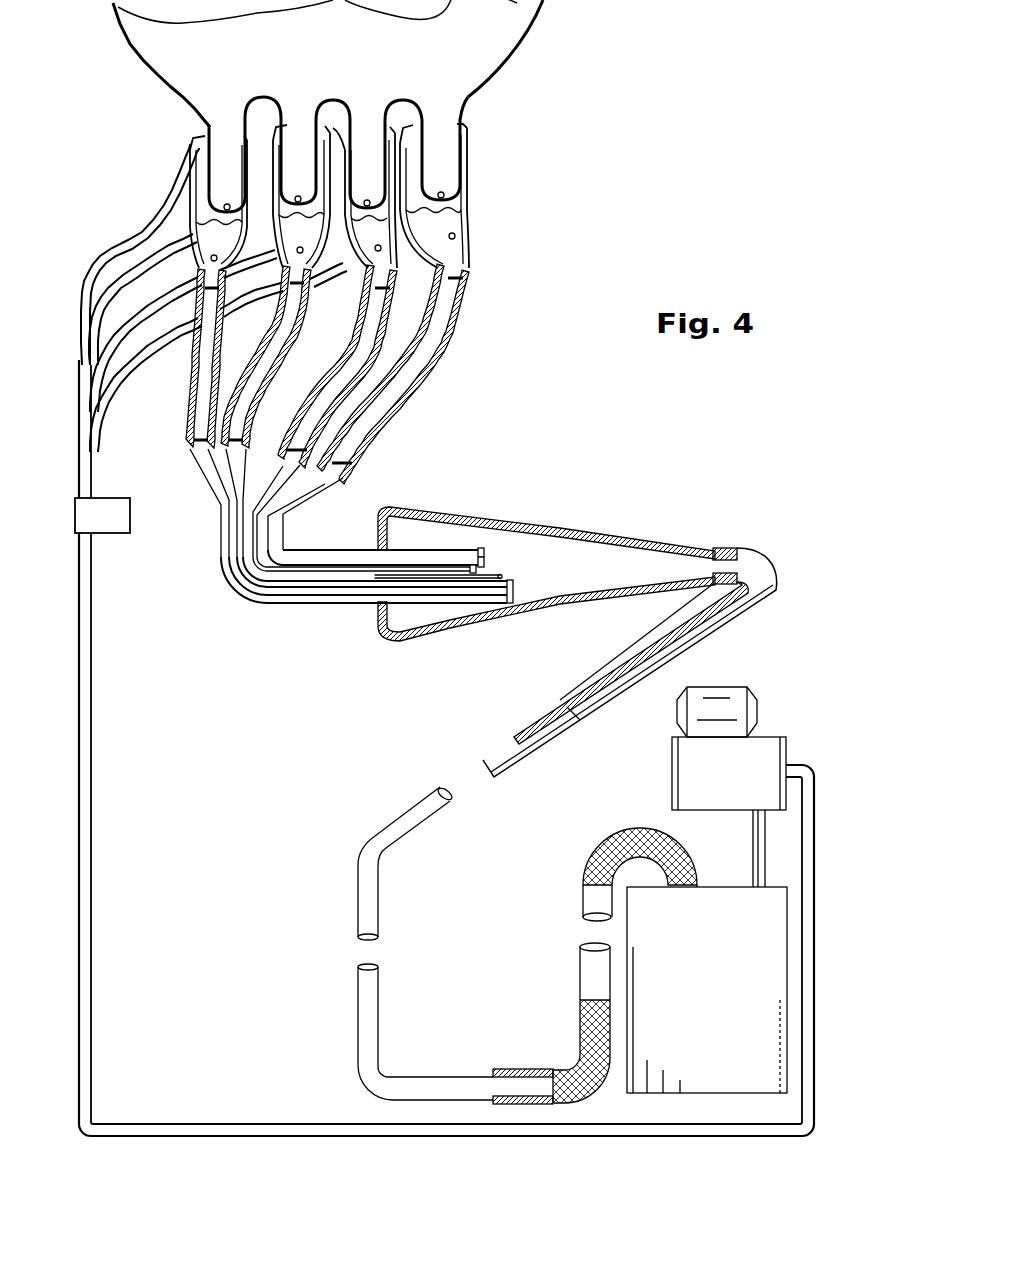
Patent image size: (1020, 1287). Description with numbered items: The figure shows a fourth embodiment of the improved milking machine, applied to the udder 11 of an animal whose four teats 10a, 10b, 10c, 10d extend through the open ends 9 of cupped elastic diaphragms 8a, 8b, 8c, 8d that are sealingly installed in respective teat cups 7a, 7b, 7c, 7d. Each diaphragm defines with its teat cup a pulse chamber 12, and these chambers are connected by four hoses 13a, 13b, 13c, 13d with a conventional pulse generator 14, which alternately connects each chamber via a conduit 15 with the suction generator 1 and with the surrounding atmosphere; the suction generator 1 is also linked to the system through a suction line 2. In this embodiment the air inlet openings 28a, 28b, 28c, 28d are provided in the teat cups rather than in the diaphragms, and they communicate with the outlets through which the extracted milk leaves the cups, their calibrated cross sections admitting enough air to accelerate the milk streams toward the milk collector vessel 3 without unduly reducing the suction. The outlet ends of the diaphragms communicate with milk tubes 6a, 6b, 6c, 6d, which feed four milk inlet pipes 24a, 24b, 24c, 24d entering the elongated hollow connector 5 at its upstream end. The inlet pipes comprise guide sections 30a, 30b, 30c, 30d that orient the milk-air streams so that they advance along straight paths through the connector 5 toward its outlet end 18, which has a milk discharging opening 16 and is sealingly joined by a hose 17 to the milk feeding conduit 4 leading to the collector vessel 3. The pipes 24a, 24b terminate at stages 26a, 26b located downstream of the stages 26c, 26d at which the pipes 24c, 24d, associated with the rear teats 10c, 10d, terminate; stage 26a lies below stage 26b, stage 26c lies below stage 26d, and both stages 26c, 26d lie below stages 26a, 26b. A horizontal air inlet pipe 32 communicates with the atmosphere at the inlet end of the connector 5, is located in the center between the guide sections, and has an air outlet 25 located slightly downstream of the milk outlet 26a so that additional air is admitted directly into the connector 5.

The suction generator 1 is at (688, 763).
The suction line 2 is at (758, 829).
The milk collector vessel 3 is at (645, 916).
The milk feeding conduit 4 is at (597, 1001).
The hollow connector 5 is at (432, 510).
The milk tube 6a is at (333, 380).
The milk tube 6b is at (430, 375).
The milk tube 6c is at (186, 402).
The milk tube 6d is at (282, 370).
The teat cup 7a is at (393, 208).
The teat cup 7b is at (478, 194).
The teat cup 7c is at (194, 212).
The teat cup 7d is at (278, 214).
The elastic diaphragm 8a is at (386, 228).
The elastic diaphragm 8b is at (460, 203).
The elastic diaphragm 8c is at (216, 224).
The elastic diaphragm 8d is at (312, 213).
The open end 9 is at (466, 117).
The teat 10a is at (363, 127).
The teat 10b is at (442, 108).
The teat 10c is at (218, 118).
The teat 10d is at (300, 120).
The udder 11 is at (299, 29).
The pulse chamber 12 is at (470, 150).
The hose 13a is at (133, 329).
The hose 13b is at (163, 362).
The hose 13c is at (140, 229).
The hose 13d is at (133, 285).
The pulse generator 14 is at (116, 509).
The conduit 15 is at (800, 1130).
The milk discharging opening 16 is at (755, 566).
The hose 17 is at (371, 1067).
The outlet end 18 is at (724, 550).
The milk inlet pipe 24a is at (312, 463).
The milk inlet pipe 24b is at (296, 509).
The milk inlet pipe 24c is at (216, 485).
The milk inlet pipe 24d is at (241, 476).
The air outlet 25 is at (502, 575).
The milk outlet stage 26a is at (484, 566).
The milk outlet stage 26b is at (484, 555).
The milk outlet stage 26c is at (511, 605).
The milk outlet stage 26d is at (473, 575).
The air inlet opening 28a is at (377, 250).
The air inlet opening 28b is at (456, 238).
The air inlet opening 28c is at (219, 260).
The air inlet opening 28d is at (302, 252).
The guide section 30a is at (306, 588).
The guide section 30b is at (323, 550).
The guide section 30c is at (360, 604).
The guide section 30d is at (324, 586).
The air inlet pipe 32 is at (432, 583).